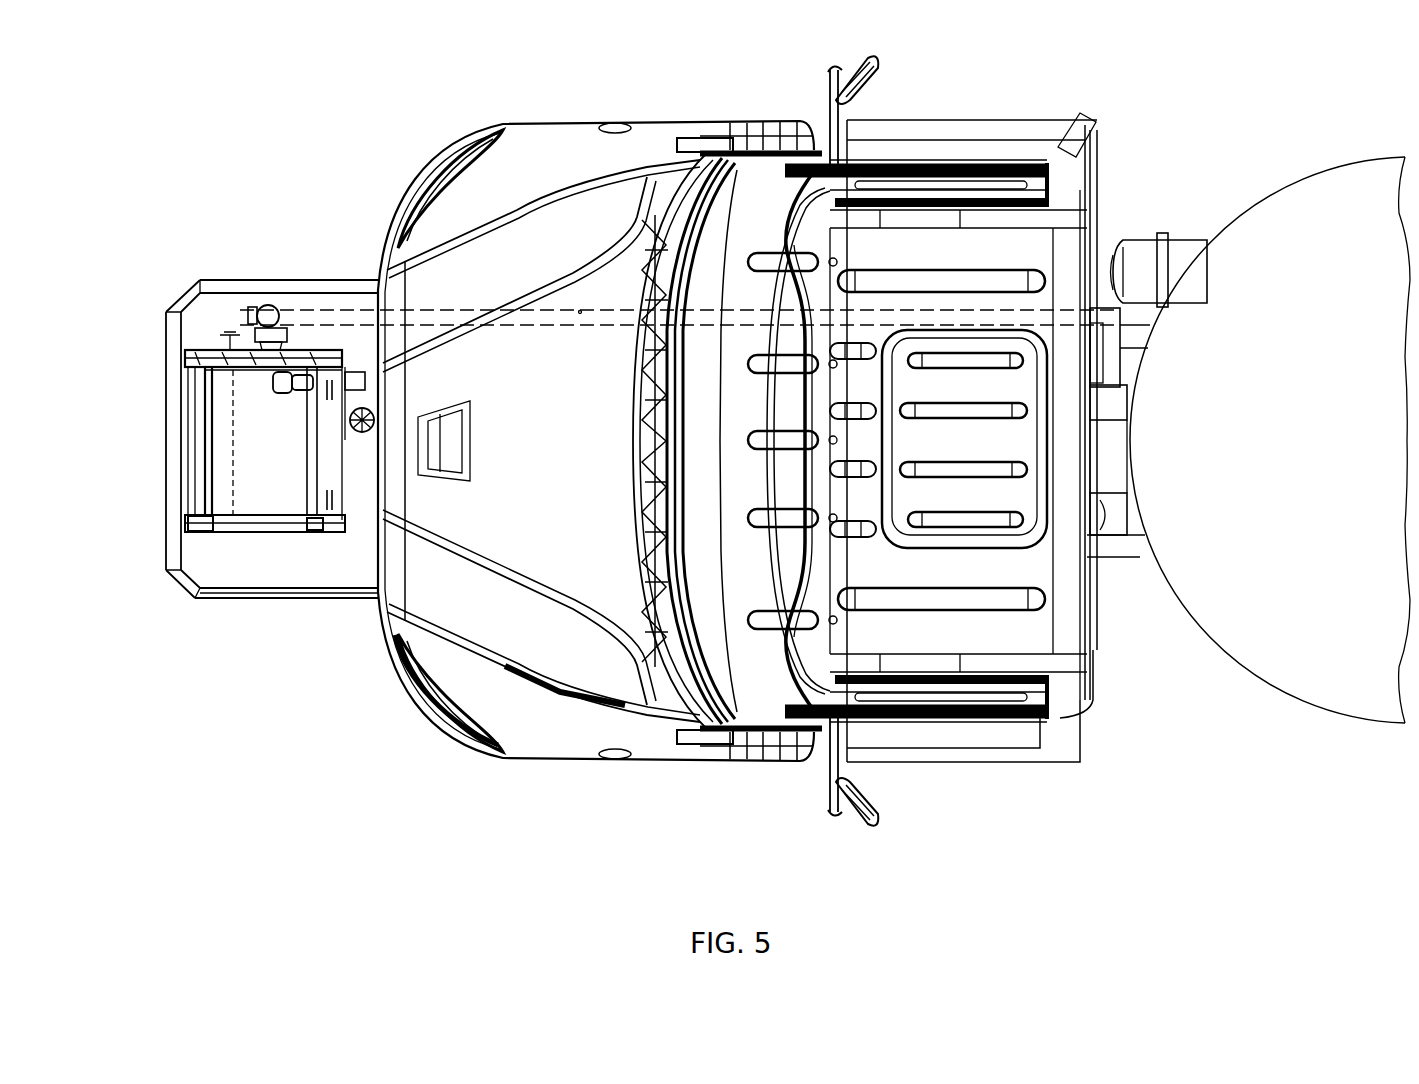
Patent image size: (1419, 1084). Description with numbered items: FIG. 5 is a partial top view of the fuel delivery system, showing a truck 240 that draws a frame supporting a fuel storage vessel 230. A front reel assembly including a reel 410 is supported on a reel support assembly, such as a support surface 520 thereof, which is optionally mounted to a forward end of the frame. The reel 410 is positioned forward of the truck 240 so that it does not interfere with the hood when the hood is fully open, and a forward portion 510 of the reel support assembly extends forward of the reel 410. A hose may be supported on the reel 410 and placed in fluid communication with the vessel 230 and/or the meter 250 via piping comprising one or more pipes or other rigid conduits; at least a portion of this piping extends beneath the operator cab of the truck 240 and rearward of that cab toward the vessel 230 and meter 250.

The fuel storage vessel 230 is at (1323, 170).
The truck 240 is at (933, 185).
The meter 250 is at (1128, 545).
The reel 410 is at (203, 348).
The forward portion 510 is at (167, 456).
The support surface 520 is at (302, 565).